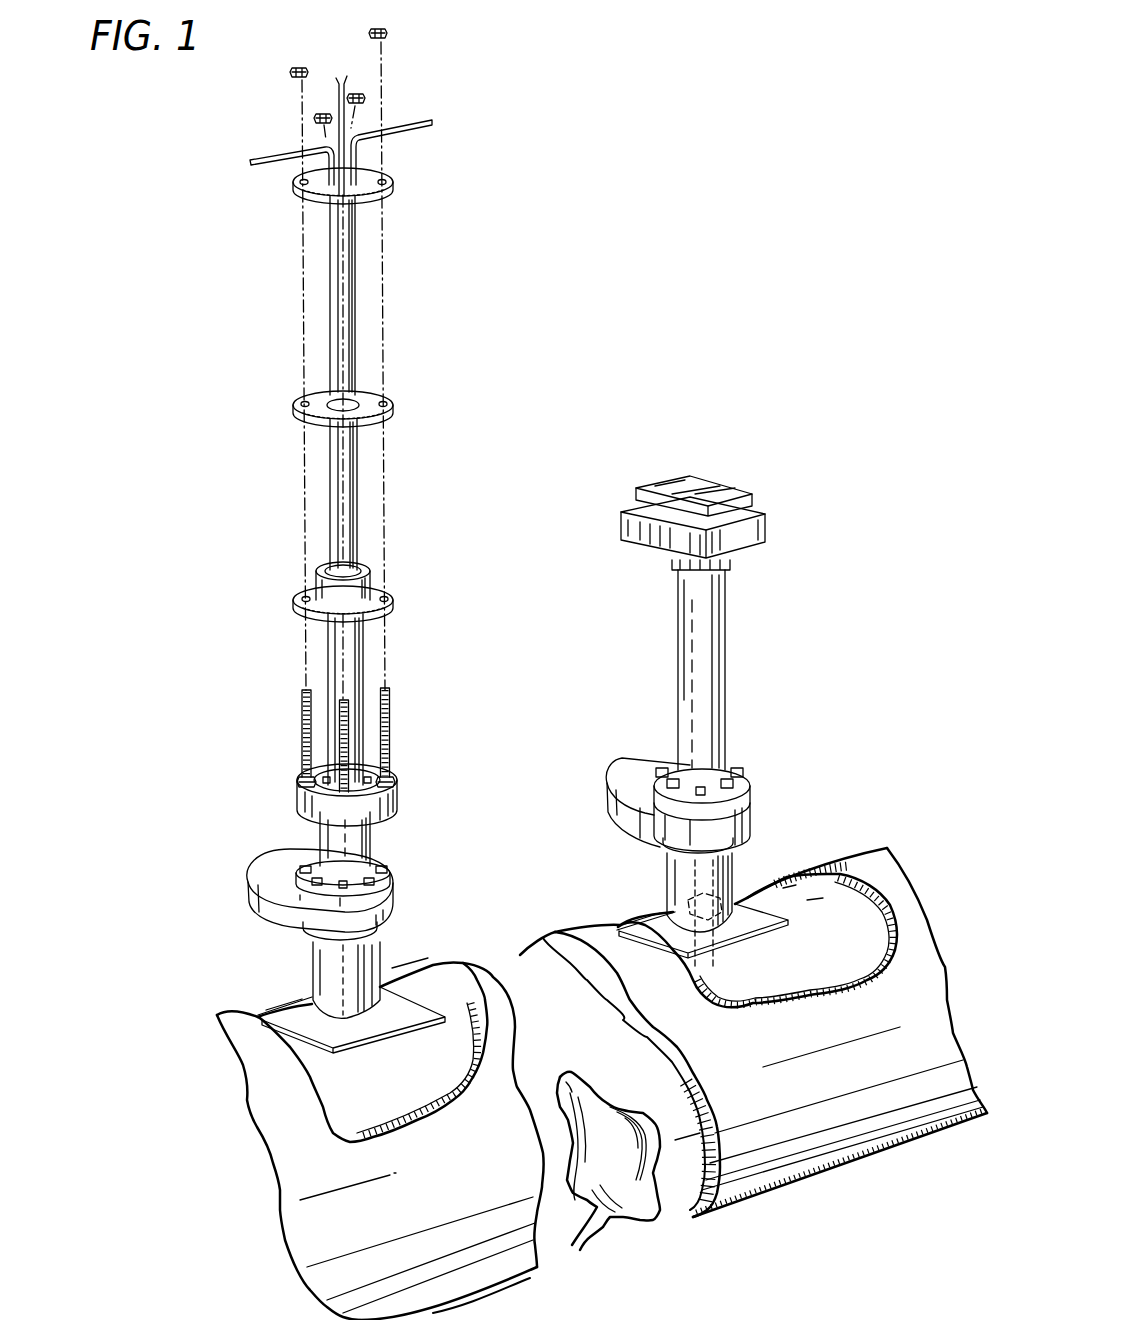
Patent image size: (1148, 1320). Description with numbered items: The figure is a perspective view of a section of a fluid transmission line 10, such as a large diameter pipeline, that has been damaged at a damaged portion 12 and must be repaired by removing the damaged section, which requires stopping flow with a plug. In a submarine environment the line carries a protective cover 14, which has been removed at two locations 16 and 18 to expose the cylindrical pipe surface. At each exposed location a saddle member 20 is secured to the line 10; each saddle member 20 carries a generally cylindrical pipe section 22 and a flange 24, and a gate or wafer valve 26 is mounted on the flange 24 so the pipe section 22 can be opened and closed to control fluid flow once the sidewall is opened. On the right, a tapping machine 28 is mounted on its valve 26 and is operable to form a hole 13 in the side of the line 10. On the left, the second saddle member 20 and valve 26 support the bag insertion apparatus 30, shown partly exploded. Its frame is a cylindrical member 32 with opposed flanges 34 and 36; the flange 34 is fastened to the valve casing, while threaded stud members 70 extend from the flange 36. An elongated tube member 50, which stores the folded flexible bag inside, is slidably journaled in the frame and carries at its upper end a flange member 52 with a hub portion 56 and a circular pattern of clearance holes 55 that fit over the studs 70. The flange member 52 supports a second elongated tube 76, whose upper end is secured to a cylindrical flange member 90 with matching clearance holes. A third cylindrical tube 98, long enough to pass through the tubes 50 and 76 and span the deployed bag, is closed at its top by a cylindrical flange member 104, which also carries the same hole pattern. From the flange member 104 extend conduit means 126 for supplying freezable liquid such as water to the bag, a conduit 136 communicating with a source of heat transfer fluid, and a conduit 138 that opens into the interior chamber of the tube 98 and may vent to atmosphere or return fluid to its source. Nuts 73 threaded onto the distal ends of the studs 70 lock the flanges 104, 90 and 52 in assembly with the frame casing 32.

The fluid transmission line 10 is at (857, 905).
The damaged portion 12 is at (622, 1226).
The hole 13 is at (742, 946).
The protective cover 14 is at (897, 936).
The removed cover location 16 is at (800, 870).
The removed cover location 18 is at (417, 1110).
The saddle member 20 is at (300, 1005).
The pipe section 22 is at (373, 960).
The flange 24 is at (305, 937).
The gate or wafer valve 26 is at (248, 882).
The tapping machine 28 is at (728, 694).
The bag insertion apparatus 30 is at (388, 527).
The cylindrical member 32 is at (372, 850).
The flange 34 is at (396, 880).
The flange 36 is at (397, 803).
The tube member 50 is at (358, 742).
The flange member 52 is at (391, 610).
The clearance holes 55 is at (388, 597).
The hub portion 56 is at (371, 580).
The threaded stud members 70 is at (391, 707).
The nuts 73 is at (320, 120).
The second elongated tube 76 is at (330, 475).
The cylindrical flange member 90 is at (300, 405).
The third cylindrical tube 98 is at (331, 293).
The cylindrical flange member 104 is at (312, 193).
The conduit means 126 is at (264, 156).
The conduit 136 is at (422, 128).
The conduit 138 is at (336, 84).